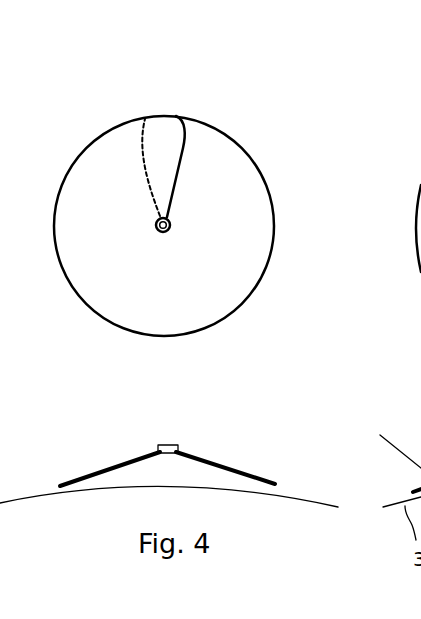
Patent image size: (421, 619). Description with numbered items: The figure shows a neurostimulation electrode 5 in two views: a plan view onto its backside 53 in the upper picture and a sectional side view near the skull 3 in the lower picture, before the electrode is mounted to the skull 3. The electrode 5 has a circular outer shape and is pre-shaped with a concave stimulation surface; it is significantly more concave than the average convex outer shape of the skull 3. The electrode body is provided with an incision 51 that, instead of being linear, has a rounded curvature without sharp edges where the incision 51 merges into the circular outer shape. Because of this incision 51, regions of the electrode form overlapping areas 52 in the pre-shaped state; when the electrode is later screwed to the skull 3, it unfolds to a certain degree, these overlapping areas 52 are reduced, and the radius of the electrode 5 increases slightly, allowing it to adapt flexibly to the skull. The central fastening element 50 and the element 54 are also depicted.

The skull 3 is at (14, 499).
The electrode 5 is at (416, 247).
The hub 50 is at (171, 227).
The incision 51 is at (188, 147).
The overlapping areas 52 is at (162, 150).
The backside 53 is at (105, 464).
The second blade 54 is at (130, 465).